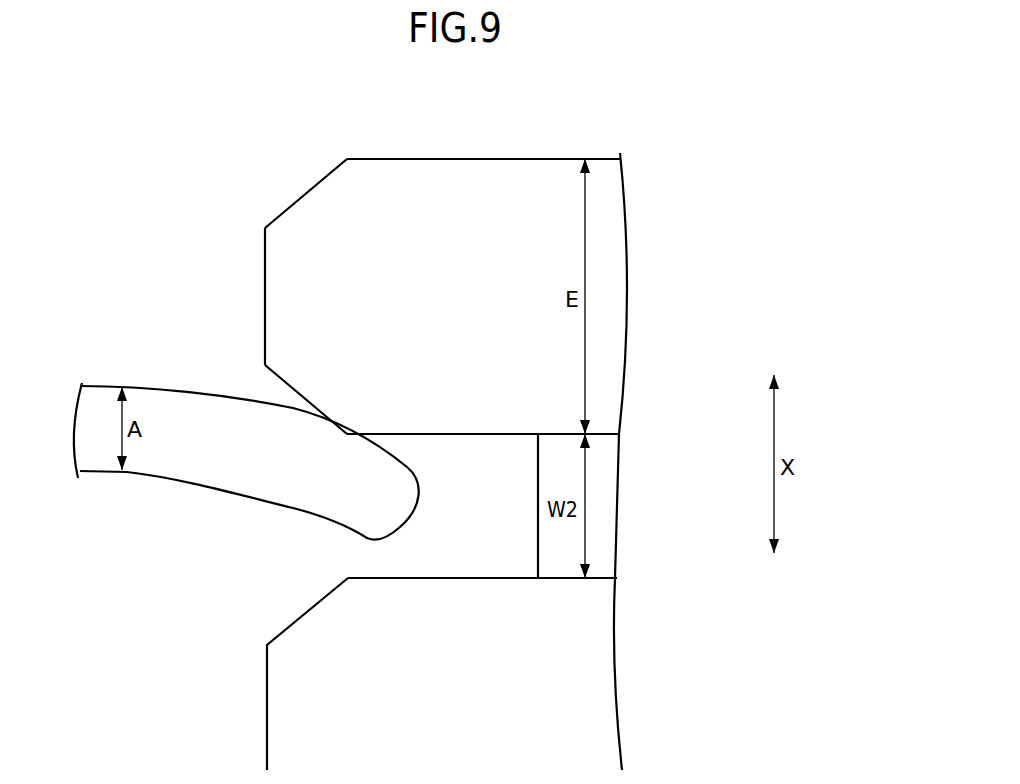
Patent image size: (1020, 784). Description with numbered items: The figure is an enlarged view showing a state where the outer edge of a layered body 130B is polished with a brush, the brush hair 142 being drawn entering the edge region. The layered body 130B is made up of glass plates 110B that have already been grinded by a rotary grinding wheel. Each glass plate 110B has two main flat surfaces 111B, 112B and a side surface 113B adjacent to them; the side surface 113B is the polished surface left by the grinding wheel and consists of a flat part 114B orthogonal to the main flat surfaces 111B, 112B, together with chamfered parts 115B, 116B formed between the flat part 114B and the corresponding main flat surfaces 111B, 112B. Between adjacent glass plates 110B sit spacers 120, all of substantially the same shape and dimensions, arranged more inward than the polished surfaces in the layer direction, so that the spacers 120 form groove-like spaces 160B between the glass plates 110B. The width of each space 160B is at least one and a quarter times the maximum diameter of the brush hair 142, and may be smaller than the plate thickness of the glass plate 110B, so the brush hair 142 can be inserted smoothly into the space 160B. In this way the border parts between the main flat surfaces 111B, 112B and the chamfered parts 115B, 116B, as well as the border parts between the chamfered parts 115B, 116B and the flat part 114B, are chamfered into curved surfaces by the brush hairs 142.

The layered body 130B is at (355, 330).
The main flat surface 111B is at (442, 159).
The main flat surface 112B is at (443, 434).
The side surface 113B is at (218, 296).
The flat part 114B is at (265, 288).
The chamfered part 115B is at (290, 204).
The chamfered part 116B is at (257, 393).
The glass plate 110B is at (602, 292).
The spacer 120 is at (602, 493).
The brush hair 142 is at (200, 469).
The space 160B is at (358, 561).